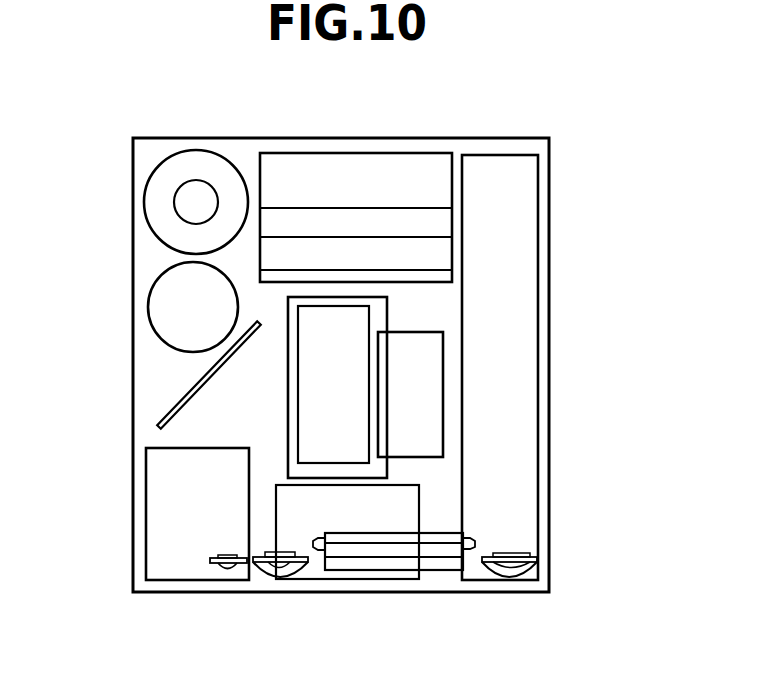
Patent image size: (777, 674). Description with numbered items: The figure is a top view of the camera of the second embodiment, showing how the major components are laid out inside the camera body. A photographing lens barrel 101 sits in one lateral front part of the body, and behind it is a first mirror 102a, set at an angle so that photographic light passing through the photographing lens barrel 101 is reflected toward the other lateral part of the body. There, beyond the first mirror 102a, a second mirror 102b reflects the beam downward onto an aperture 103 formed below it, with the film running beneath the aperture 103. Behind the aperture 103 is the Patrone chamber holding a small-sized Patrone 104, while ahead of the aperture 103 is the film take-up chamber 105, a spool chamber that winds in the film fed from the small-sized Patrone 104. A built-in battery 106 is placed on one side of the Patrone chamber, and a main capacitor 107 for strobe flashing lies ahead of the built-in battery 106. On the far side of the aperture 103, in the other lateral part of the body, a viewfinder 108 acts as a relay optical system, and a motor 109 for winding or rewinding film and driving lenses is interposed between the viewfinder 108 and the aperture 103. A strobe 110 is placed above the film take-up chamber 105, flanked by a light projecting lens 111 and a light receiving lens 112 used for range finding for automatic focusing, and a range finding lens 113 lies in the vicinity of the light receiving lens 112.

The photographing lens barrel 101 is at (167, 565).
The first mirror 102a is at (163, 417).
The second mirror 102b is at (357, 335).
The aperture 103 is at (377, 312).
The small-sized Patrone 104 is at (423, 165).
The film take-up chamber 105 is at (308, 567).
The built-in battery 106 is at (204, 163).
The main capacitor 107 is at (158, 305).
The viewfinder 108 is at (518, 407).
The motor 109 is at (428, 363).
The strobe 110 is at (443, 565).
The light projecting lens 111 is at (513, 562).
The light receiving lens 112 is at (270, 573).
The range finding lens 113 is at (225, 568).